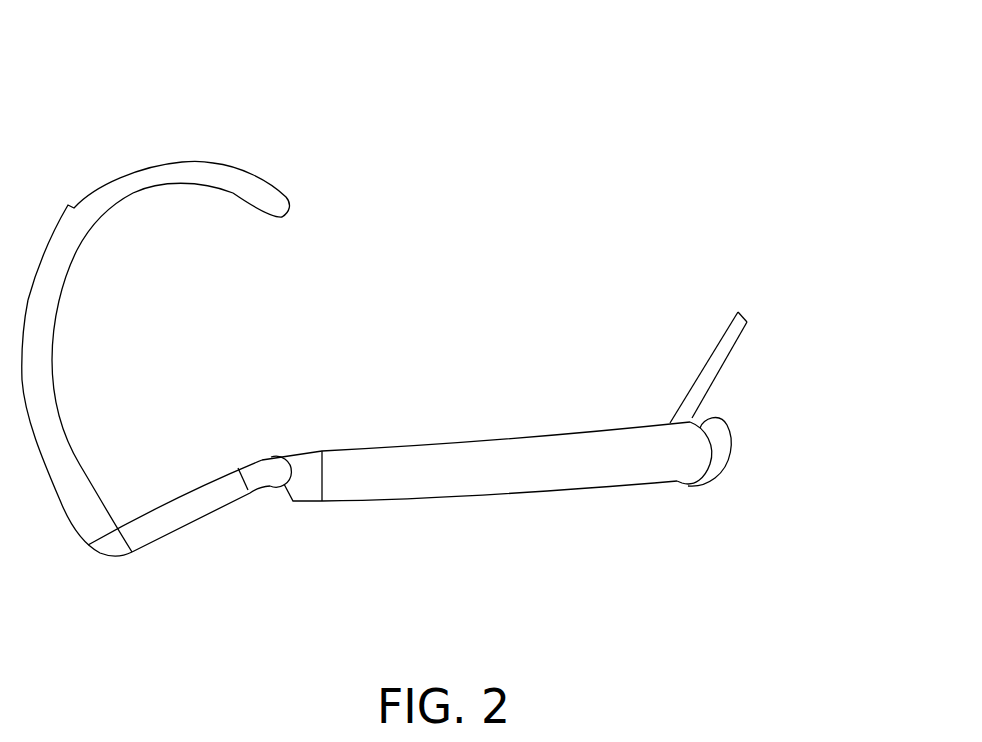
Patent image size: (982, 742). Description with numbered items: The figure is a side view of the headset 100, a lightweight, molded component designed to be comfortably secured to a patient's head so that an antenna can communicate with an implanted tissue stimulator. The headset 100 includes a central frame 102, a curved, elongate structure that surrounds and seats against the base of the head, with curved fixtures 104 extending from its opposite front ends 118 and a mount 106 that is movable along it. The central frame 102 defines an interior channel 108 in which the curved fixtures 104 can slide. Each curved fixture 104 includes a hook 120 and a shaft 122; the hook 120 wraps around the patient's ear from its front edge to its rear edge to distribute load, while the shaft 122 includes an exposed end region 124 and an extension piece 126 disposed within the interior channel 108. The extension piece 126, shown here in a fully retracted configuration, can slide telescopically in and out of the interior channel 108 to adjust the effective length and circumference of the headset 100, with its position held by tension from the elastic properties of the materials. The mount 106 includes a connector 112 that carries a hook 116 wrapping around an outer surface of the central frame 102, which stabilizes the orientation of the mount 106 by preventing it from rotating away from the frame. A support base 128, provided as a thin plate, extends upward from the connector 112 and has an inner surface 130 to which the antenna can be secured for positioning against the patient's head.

The headset 100 is at (558, 157).
The central frame 102 is at (418, 447).
The curved fixture 104 is at (147, 152).
The mount 106 is at (757, 310).
The interior channel 108 is at (276, 512).
The connector 112 is at (672, 491).
The hook 116 is at (728, 462).
The front end 118 is at (201, 519).
The hook 120 is at (231, 165).
The shaft 122 is at (135, 510).
The exposed end region 124 is at (77, 428).
The extension piece 126 is at (267, 457).
The support base 128 is at (727, 365).
The inner surface 130 is at (702, 358).